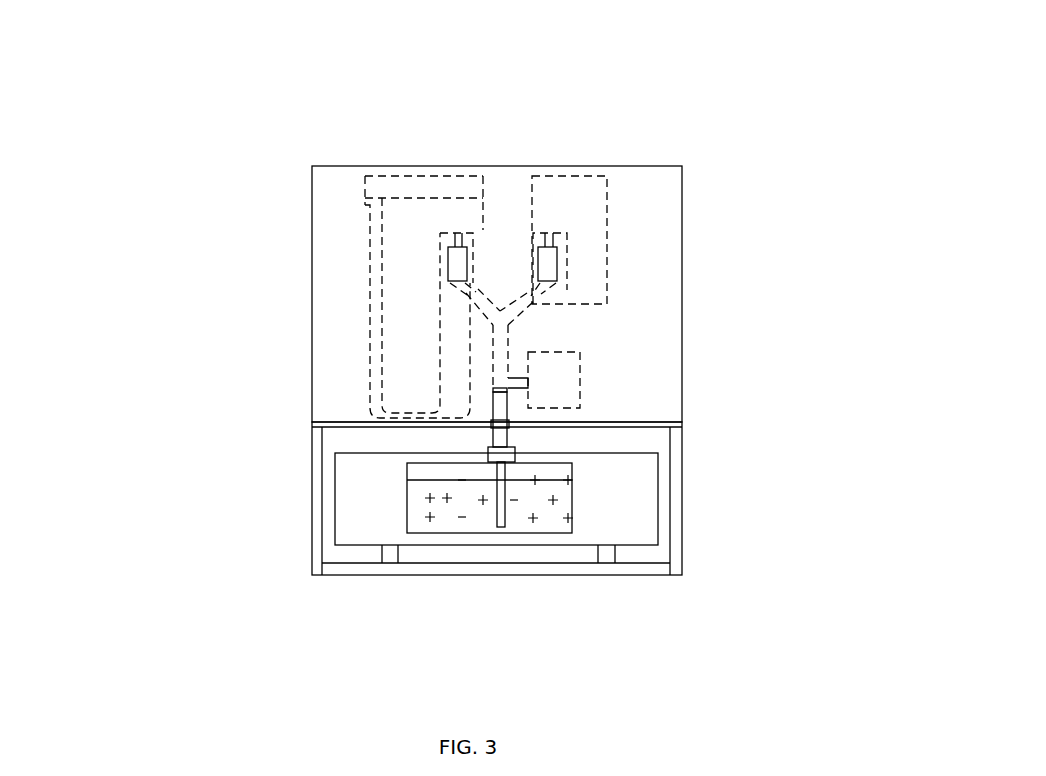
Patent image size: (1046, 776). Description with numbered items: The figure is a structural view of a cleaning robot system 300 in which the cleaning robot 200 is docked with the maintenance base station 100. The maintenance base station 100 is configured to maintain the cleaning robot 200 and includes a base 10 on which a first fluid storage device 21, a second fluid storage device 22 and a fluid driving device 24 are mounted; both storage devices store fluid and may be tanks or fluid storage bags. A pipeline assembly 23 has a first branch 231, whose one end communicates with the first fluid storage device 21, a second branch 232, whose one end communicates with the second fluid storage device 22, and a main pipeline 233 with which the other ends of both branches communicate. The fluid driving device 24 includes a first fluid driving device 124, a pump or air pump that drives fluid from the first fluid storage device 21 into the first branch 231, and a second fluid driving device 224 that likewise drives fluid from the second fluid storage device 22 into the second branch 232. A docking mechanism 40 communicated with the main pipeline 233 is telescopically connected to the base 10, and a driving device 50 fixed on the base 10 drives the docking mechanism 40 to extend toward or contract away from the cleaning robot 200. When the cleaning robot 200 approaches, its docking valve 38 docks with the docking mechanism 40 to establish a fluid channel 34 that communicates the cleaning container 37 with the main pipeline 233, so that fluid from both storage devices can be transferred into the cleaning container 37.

The cleaning robot system 300 is at (664, 111).
The maintenance base station 100 is at (662, 250).
The base 10 is at (318, 447).
The first fluid storage device 21 is at (385, 258).
The second fluid storage device 22 is at (583, 228).
The fluid driving device 24 is at (548, 67).
The first fluid driving device 124 is at (458, 265).
The second fluid driving device 224 is at (548, 262).
The pipeline assembly 23 is at (192, 248).
The first branch 231 is at (447, 293).
The second branch 232 is at (527, 297).
The main pipeline 233 is at (505, 343).
The driving device 50 is at (562, 380).
The docking mechanism 40 is at (515, 428).
The fluid channel 34 is at (500, 432).
The cleaning robot 200 is at (653, 497).
The cleaning container 37 is at (483, 533).
The docking valve 38 is at (495, 458).